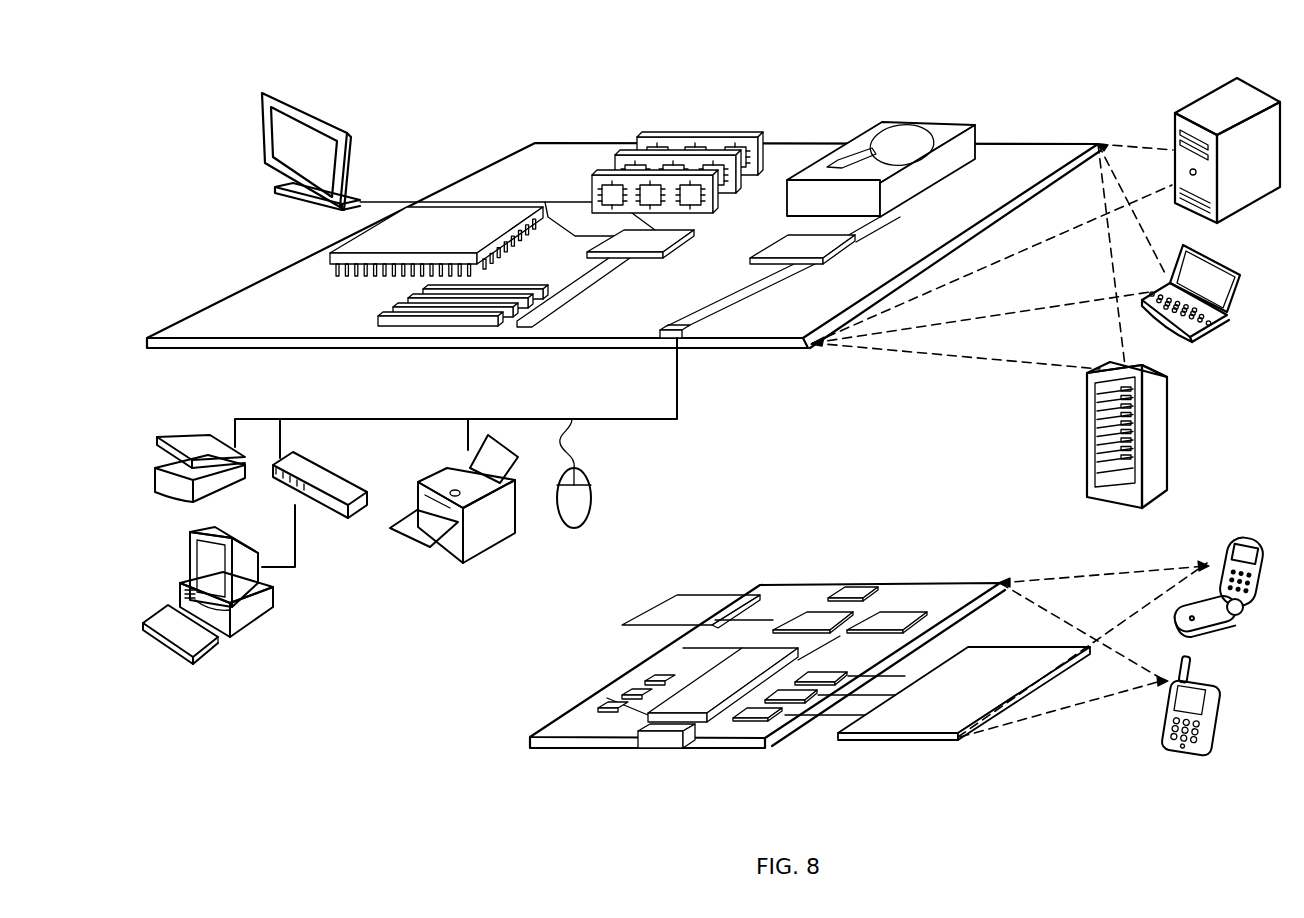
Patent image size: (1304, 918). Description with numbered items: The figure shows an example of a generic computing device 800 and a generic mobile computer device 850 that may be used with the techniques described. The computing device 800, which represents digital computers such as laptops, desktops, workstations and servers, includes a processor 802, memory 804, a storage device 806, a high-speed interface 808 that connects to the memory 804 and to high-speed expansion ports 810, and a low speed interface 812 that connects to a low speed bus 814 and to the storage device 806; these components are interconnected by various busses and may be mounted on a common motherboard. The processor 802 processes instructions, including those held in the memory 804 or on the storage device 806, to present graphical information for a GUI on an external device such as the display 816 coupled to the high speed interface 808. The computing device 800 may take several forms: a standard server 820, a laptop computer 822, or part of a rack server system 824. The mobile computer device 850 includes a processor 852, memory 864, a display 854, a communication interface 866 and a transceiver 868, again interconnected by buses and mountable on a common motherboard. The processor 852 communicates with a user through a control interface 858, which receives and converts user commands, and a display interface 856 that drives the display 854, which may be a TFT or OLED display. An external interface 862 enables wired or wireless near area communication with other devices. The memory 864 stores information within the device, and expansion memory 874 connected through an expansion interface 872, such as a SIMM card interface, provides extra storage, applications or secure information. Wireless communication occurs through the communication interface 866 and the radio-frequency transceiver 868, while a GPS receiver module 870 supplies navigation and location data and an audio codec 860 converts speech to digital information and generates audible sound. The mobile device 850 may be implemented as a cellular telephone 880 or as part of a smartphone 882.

The computing device 800 is at (452, 116).
The processor 802 is at (330, 256).
The memory 804 is at (646, 137).
The storage device 806 is at (872, 121).
The high-speed interface 808 is at (620, 244).
The high-speed expansion ports 810 is at (397, 312).
The low speed interface 812 is at (787, 240).
The low speed bus 814 is at (678, 338).
The display 816 is at (269, 92).
The standard server 820 is at (1174, 129).
The laptop computer 822 is at (1238, 268).
The rack server system 824 is at (1087, 458).
The mobile computer device 850 is at (506, 748).
The processor 852 is at (698, 708).
The display 854 is at (923, 725).
The display interface 856 is at (763, 712).
The control interface 858 is at (796, 692).
The audio codec 860 is at (820, 673).
The external interface 862 is at (665, 738).
The memory 864 is at (608, 698).
The communication interface 866 is at (807, 618).
The transceiver 868 is at (888, 618).
The GPS receiver module 870 is at (866, 585).
The expansion interface 872 is at (746, 596).
The expansion memory 874 is at (678, 596).
The mobile phone 880 is at (1223, 549).
The cellular handset 882 is at (1165, 708).